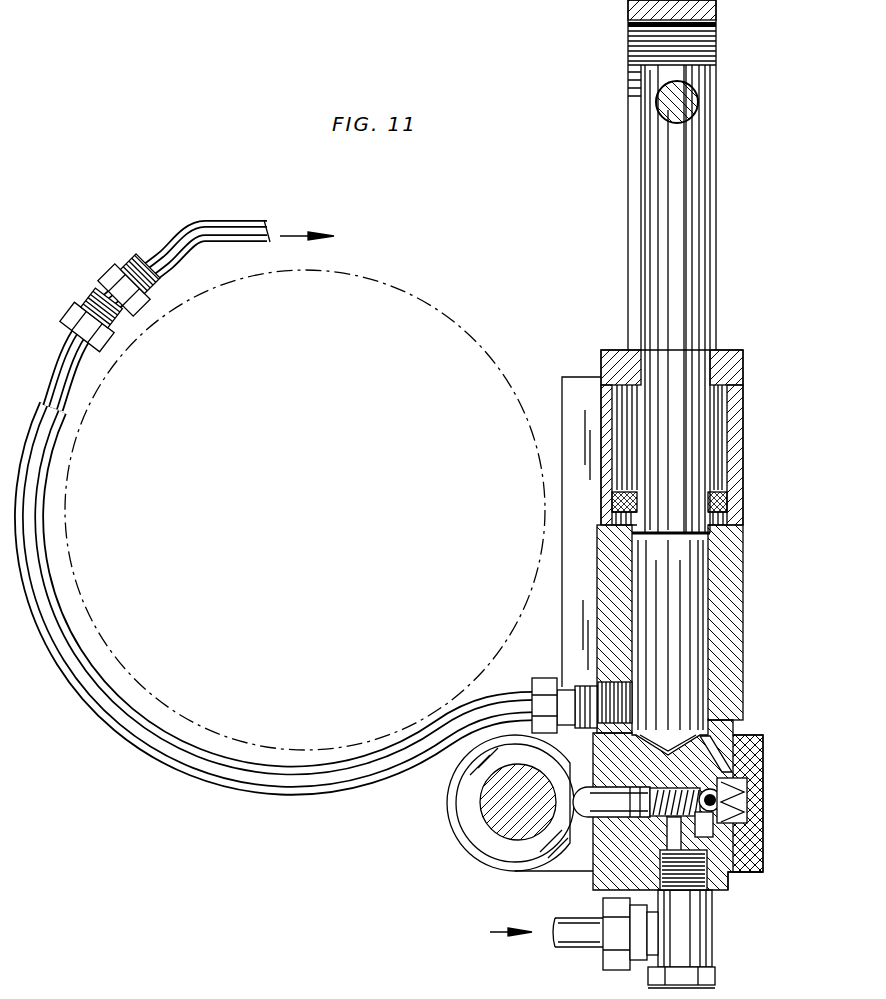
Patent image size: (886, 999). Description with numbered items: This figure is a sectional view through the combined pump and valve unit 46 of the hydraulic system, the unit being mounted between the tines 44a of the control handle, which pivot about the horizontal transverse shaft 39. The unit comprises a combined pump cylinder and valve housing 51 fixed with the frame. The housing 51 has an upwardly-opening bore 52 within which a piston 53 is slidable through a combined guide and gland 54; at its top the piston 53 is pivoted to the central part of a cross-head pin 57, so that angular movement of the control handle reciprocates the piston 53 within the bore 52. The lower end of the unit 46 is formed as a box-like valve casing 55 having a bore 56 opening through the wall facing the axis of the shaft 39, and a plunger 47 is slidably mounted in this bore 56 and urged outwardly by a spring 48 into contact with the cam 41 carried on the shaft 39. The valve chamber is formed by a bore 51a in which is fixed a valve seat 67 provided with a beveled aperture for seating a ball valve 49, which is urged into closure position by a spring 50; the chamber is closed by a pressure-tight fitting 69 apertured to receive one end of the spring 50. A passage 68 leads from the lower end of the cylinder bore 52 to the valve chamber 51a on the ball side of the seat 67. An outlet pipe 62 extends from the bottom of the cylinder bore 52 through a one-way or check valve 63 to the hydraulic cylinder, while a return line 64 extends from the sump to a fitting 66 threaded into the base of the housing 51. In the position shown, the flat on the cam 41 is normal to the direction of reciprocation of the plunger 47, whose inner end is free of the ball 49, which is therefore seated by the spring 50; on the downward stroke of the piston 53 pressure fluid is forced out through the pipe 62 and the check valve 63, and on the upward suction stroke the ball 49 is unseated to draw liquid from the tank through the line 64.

The shaft 39 is at (463, 812).
The cam element 41 is at (497, 848).
The tines of the control rod 44a is at (632, 213).
The combined pump and valve unit 46 is at (585, 533).
The plunger 47 is at (611, 817).
The spring 48 is at (660, 755).
The ball valve 49 is at (700, 760).
The spring 50 is at (757, 793).
The combined pump cylinder and valve housing 51 is at (597, 877).
The bore 51a is at (727, 887).
The bore 52 is at (698, 595).
The piston 53 is at (698, 247).
The combined guide and gland 54 is at (723, 429).
The box-like valve casing 55 is at (748, 734).
The bore 56 is at (593, 761).
The cross-head pin 57 is at (657, 104).
The outlet pipe 62 is at (277, 794).
The one-way or check valve 63 is at (90, 292).
The return line 64 is at (574, 948).
The fitting 66 is at (712, 938).
The valve seat 67 is at (667, 853).
The passage 68 is at (684, 734).
The pressure-tight fitting 69 is at (758, 831).